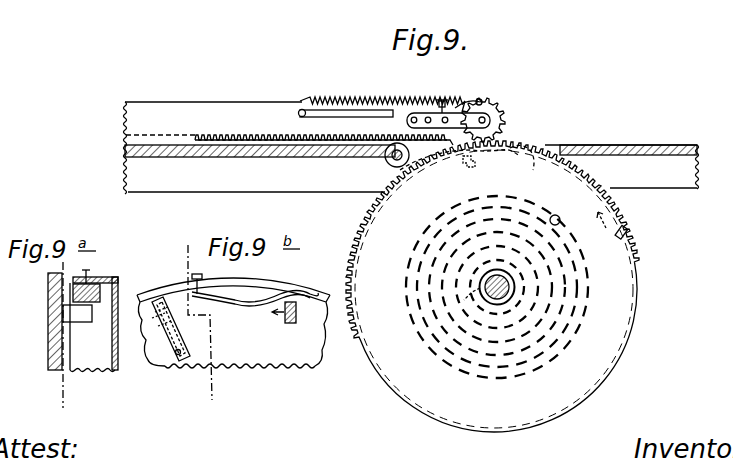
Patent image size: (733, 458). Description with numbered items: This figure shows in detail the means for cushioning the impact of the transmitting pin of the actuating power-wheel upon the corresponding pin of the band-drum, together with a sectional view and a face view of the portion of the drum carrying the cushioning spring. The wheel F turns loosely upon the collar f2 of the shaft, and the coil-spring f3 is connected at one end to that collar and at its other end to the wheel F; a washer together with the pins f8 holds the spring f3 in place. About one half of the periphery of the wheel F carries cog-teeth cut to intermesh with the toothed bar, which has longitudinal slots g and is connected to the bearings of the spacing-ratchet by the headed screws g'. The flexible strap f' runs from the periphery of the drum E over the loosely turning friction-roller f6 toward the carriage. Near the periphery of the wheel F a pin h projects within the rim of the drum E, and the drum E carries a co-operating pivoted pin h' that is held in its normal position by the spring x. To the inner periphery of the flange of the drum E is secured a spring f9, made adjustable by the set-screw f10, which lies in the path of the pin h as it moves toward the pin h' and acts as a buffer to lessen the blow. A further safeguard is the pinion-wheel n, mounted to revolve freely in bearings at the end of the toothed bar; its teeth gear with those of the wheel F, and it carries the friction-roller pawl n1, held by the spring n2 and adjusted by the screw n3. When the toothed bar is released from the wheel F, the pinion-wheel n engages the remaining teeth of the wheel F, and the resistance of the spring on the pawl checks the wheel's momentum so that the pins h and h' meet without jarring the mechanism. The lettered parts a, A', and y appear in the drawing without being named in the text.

In FIG. 9, the plate a is at (213, 148).
In FIG. 9, the carriage plate A' is at (256, 204).
In FIG. 9, the flexible strap f' is at (360, 281).
In FIG. 9, the longitudinal slots g is at (382, 91).
In FIG. 9, the headed screws g' is at (334, 96).
In FIG. 9, the pinion-wheel n is at (493, 120).
In FIG. 9, the friction-roller pawl n1 is at (474, 101).
In FIG. 9, the spring n2 is at (428, 113).
In FIG. 9, the screw n3 is at (412, 113).
In FIG. 9, the wheel F is at (492, 286).
In FIG. 9A, the wheel F is at (50, 302).
In FIG. 9, the friction-roller f6 is at (386, 158).
In FIG. 9, the pins f8 is at (440, 222).
In FIG. 9, the collar f2 is at (514, 286).
In FIG. 9, the coil-spring f3 is at (436, 294).
In FIG. 9, the pin h is at (608, 233).
In FIG. 9A, the pin h is at (79, 327).
In FIG. 9B, the pin h is at (284, 326).
In FIG. 9, the pivoted pin h' is at (453, 171).
In FIG. 9B, the pivoted pin h' is at (179, 329).
In FIG. 9, the spring f9 is at (498, 152).
In FIG. 9A, the spring f9 is at (98, 286).
In FIG. 9B, the spring f9 is at (238, 308).
In FIG. 9, the set-screw f10 is at (533, 165).
In FIG. 9B, the set-screw f10 is at (202, 277).
In FIG. 9A, the drum E is at (124, 366).
In FIG. 9B, the drum E is at (185, 292).
In FIG. 9A, the spring x is at (69, 336).
In FIG. 9B, the section line y- y is at (182, 251).